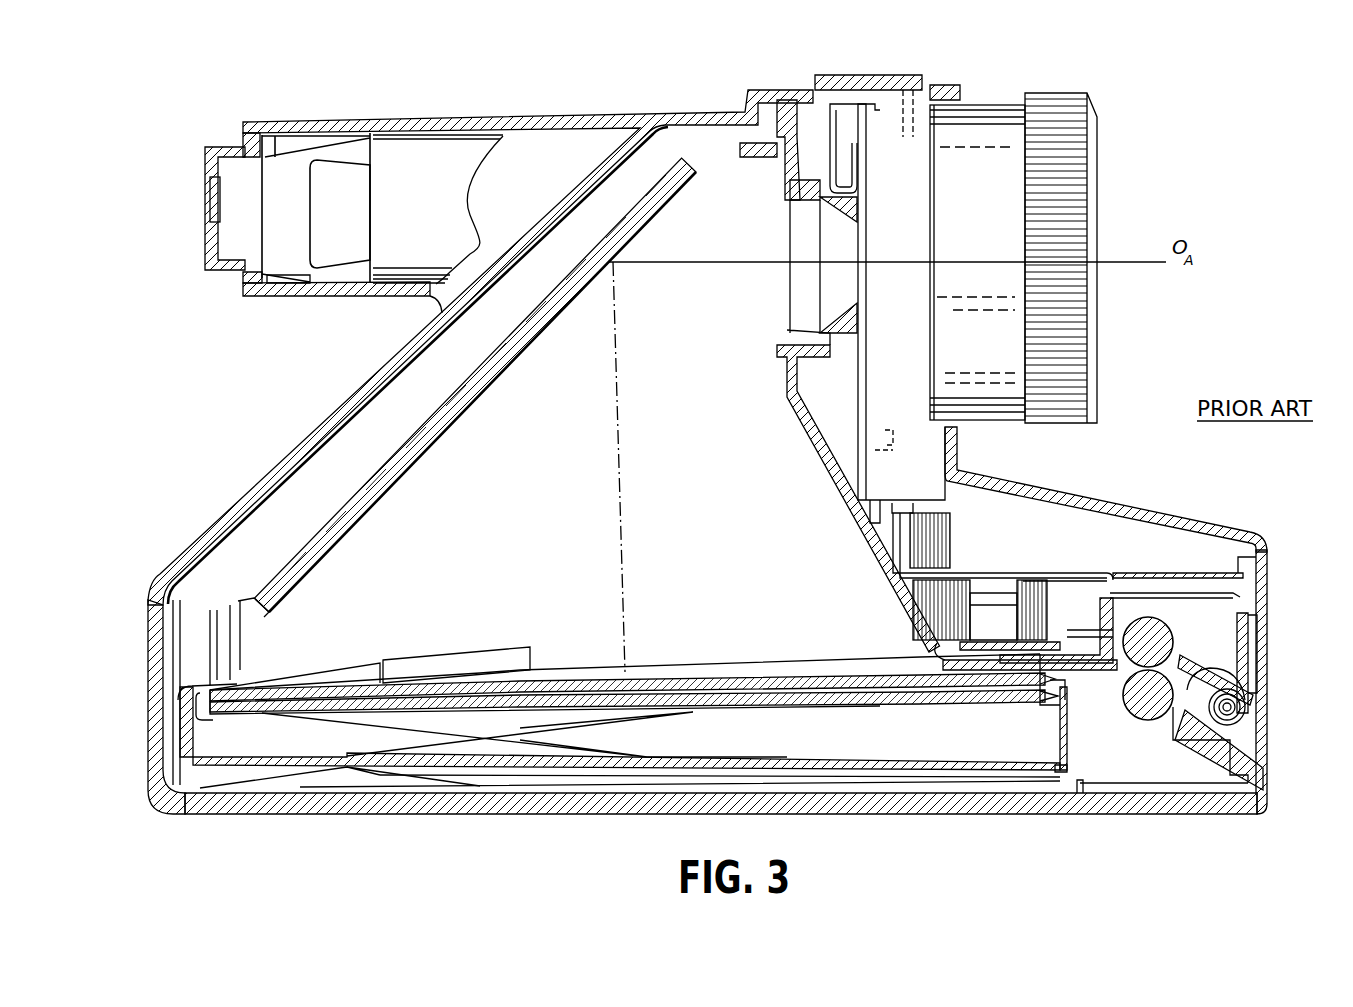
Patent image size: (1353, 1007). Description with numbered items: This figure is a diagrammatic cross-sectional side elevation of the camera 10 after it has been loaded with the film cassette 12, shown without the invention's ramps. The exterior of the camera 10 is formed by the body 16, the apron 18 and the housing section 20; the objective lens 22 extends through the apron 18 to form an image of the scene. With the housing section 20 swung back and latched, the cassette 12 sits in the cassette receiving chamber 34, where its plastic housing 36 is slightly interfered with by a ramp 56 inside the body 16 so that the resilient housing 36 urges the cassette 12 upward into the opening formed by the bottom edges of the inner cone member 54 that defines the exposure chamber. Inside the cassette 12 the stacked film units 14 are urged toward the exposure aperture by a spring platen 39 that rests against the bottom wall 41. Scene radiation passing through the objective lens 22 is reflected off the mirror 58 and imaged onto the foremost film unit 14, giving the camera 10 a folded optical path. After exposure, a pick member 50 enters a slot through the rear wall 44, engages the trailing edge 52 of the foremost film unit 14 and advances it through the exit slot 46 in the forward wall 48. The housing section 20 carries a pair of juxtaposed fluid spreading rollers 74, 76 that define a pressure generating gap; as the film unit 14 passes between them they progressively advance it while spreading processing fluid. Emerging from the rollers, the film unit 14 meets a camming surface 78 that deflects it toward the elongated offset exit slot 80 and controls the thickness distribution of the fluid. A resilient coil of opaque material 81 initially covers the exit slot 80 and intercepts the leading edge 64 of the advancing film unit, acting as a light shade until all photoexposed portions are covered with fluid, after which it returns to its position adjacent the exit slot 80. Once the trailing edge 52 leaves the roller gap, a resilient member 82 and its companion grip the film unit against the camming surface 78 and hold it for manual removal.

The camera 10 is at (905, 72).
The cassette 12 is at (1070, 735).
The film unit 14 is at (262, 713).
The body 16 is at (505, 810).
The apron 18 is at (1105, 499).
The housing section 20 is at (1270, 782).
The objective lens 22 is at (1098, 165).
The cassette receiving chamber 34 is at (200, 796).
The housing 36 is at (262, 770).
The spring platen 39 is at (655, 725).
The bottom wall 41 is at (830, 760).
The rear wall 44 is at (175, 725).
The exit slot 46 is at (1060, 680).
The forward wall 48 is at (1068, 768).
The pick member 50 is at (412, 650).
The trailing edge 52 is at (214, 720).
The inner cone member 54 is at (349, 502).
The ramp 56 is at (845, 782).
The mirror 58 is at (458, 428).
The leading edge 64 is at (1063, 690).
The fluid spreading roller 74 is at (1160, 593).
The fluid spreading roller 76 is at (1150, 720).
The camming surface 78 is at (1180, 660).
The exit slot 80 is at (1255, 712).
The coil of opaque material 81 is at (1240, 718).
The resilient member 82 is at (1253, 640).